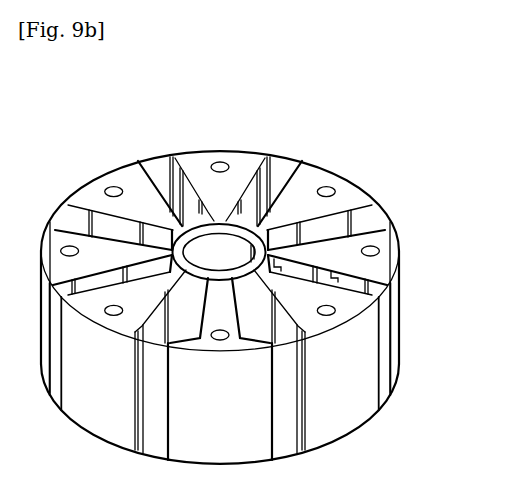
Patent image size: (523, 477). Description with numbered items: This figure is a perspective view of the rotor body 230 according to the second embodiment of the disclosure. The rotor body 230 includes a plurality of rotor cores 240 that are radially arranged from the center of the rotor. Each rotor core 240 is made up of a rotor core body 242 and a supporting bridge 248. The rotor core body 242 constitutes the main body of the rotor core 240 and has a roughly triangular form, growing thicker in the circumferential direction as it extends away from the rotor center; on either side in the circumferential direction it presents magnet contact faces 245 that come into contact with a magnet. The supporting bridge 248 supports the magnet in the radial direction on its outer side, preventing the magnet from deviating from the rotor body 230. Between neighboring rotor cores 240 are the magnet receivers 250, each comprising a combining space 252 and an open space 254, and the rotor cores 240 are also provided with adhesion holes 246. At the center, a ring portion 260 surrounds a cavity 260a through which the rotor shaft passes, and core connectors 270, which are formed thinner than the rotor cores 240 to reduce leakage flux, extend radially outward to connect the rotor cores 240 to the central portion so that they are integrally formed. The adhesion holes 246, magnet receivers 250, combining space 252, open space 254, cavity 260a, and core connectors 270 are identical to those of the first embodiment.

The rotor body 230 is at (196, 80).
The rotor core 240 is at (221, 150).
The rotor core body 242 is at (245, 157).
The magnet contact face 245 is at (281, 185).
The adhesion hole 246 is at (274, 205).
The supporting bridge 248 is at (278, 158).
The magnet receiver 250 is at (450, 229).
The combining space 252 is at (391, 283).
The open space 254 is at (378, 252).
The shaft hole 260 is at (198, 258).
The cavity 260a is at (210, 231).
The core connector 270 is at (165, 245).